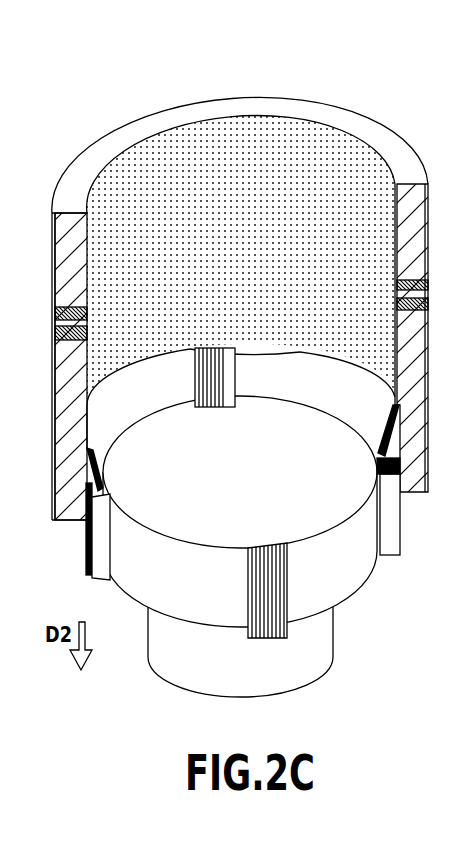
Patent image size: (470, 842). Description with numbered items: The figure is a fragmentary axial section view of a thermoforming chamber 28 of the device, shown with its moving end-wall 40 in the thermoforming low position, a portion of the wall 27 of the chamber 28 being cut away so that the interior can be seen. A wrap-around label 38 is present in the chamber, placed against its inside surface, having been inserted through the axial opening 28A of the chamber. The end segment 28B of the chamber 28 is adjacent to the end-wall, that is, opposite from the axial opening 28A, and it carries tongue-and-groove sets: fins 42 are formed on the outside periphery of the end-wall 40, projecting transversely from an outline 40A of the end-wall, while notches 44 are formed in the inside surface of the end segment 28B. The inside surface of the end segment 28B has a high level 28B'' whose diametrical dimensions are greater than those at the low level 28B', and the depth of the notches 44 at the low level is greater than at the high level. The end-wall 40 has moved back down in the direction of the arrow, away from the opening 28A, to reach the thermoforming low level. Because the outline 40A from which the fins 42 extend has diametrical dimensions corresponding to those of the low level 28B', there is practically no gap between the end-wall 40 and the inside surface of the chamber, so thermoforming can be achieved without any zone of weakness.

The wall 27 is at (408, 200).
The chamber 28 is at (166, 108).
The axial opening 28A is at (329, 126).
The end segment 28B is at (245, 407).
The low level 28B' is at (138, 399).
The high level 28B'' is at (320, 374).
The wrap-around label 38 is at (136, 182).
The moving end-wall 40 is at (338, 577).
The outline 40A is at (350, 420).
The fins 42 is at (248, 607).
The notches 44 is at (195, 380).